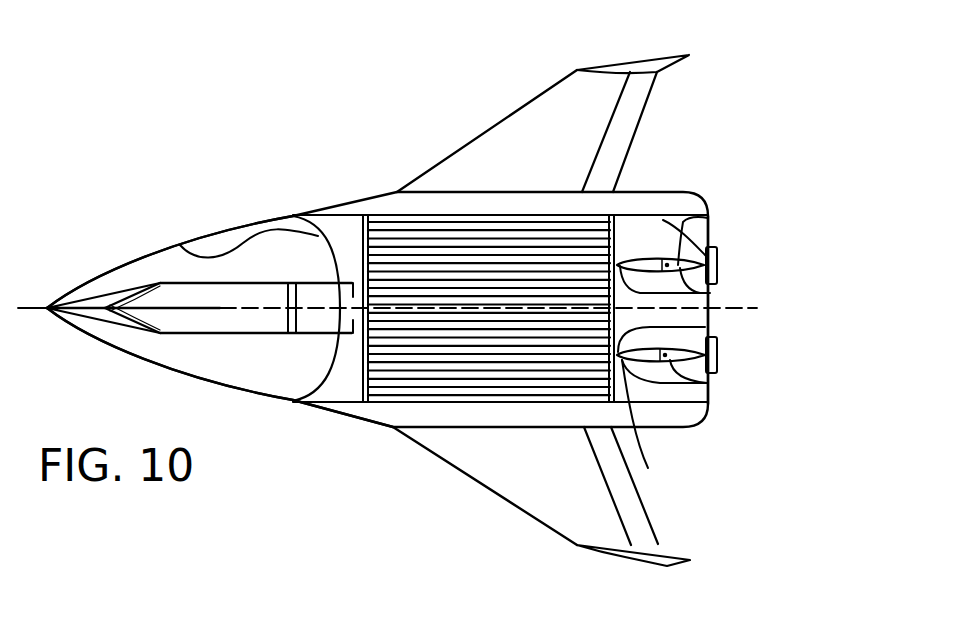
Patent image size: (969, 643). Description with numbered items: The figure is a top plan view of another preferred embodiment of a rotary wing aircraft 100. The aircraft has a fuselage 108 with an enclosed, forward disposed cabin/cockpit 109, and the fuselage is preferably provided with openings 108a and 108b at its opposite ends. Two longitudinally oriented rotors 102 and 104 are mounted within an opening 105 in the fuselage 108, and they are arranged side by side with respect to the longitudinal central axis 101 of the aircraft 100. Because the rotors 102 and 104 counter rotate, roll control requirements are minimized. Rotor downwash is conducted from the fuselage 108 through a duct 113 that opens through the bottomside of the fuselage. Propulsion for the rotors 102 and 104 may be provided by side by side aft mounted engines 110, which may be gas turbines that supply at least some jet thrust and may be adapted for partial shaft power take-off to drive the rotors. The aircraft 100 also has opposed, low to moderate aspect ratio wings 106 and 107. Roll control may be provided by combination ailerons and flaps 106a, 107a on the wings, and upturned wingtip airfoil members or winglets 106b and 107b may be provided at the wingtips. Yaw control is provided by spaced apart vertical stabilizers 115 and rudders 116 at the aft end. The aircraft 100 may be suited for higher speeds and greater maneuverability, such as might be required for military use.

The rotary wing aircraft 100 is at (765, 140).
The longitudinal central axis 101 is at (227, 310).
The rotor 102 is at (393, 200).
The rotor 104 is at (392, 418).
The opening 105 is at (405, 258).
The wing 106 is at (485, 488).
The combination aileron and flap 106a is at (633, 508).
The winglet 106b is at (622, 560).
The wing 107 is at (482, 133).
The combination aileron and flap 107a is at (626, 137).
The winglet 107b is at (641, 68).
The fuselage 108 is at (313, 410).
The opening 108a is at (187, 250).
The opening 108b is at (710, 263).
The cabin/cockpit 109 is at (160, 334).
The engine 110 is at (663, 220).
The duct 113 is at (607, 260).
The vertical stabilizer 115 is at (643, 262).
The rudder 116 is at (710, 295).